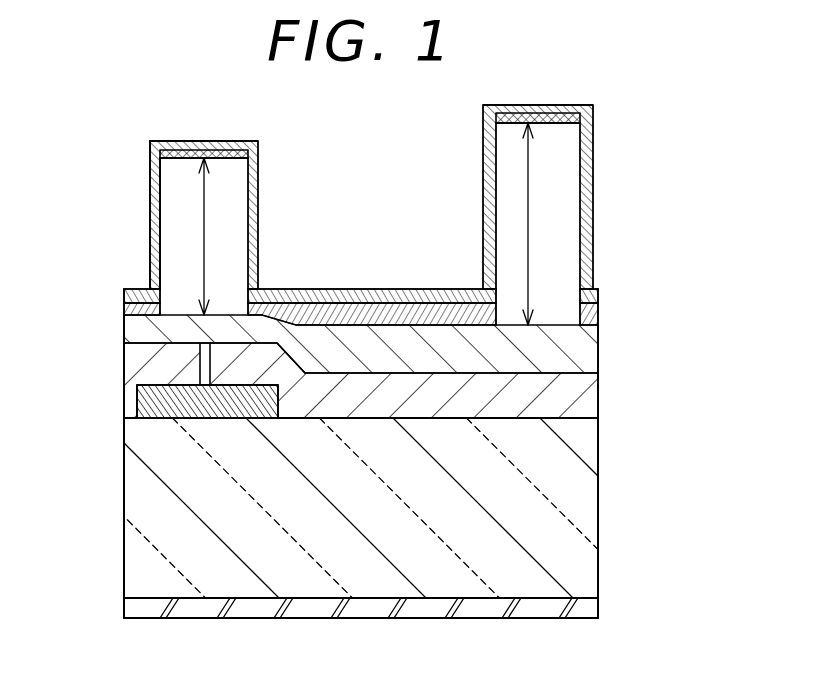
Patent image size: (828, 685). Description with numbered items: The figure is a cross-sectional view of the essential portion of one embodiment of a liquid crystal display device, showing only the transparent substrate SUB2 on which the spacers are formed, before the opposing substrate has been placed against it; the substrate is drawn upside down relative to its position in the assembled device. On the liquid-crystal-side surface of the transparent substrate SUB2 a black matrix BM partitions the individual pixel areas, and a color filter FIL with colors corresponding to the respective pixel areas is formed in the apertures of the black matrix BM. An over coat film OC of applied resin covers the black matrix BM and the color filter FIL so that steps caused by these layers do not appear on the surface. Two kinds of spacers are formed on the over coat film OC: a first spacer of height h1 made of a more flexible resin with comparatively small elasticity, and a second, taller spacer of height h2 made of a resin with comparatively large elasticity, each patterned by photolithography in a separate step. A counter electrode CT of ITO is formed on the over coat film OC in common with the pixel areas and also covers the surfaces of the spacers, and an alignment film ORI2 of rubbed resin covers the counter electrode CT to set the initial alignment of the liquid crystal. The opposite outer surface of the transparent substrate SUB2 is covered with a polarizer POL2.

The alignment film ORI2 is at (150, 258).
The height of spacer SOC(1) h1 is at (219, 236).
The height of spacer SOC(2) h2 is at (544, 224).
The counter electrode CT is at (599, 313).
The over coat film OC is at (599, 348).
The color filter FIL is at (124, 366).
The black matrix BM is at (218, 420).
The transparent substrate SUB2 is at (599, 472).
The polarizer POL2 is at (599, 615).